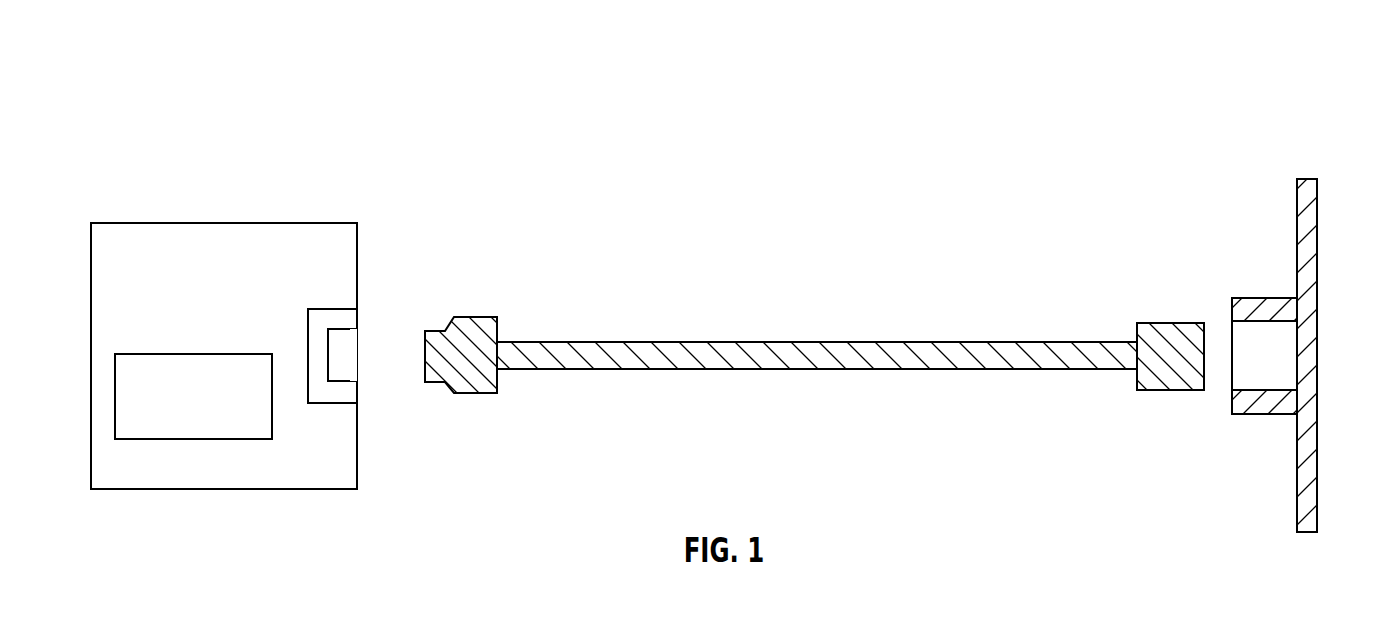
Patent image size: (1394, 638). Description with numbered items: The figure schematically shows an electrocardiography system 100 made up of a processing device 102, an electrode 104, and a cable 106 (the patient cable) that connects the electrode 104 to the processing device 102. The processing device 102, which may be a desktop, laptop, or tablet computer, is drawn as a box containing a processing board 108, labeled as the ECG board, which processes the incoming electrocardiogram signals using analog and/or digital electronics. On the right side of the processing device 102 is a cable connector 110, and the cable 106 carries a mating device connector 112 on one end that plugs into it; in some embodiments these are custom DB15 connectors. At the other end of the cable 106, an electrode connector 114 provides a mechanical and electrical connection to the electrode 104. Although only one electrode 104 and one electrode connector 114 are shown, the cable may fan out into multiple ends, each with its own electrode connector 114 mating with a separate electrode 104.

The electrocardiography system 100 is at (1234, 50).
The processing device 102 is at (160, 223).
The electrode 104 is at (1306, 253).
The cable 106 is at (812, 342).
The processing board 108 is at (183, 354).
The cable connector 110 is at (347, 392).
The device connector 112 is at (450, 327).
The electrode connector 114 is at (1162, 337).